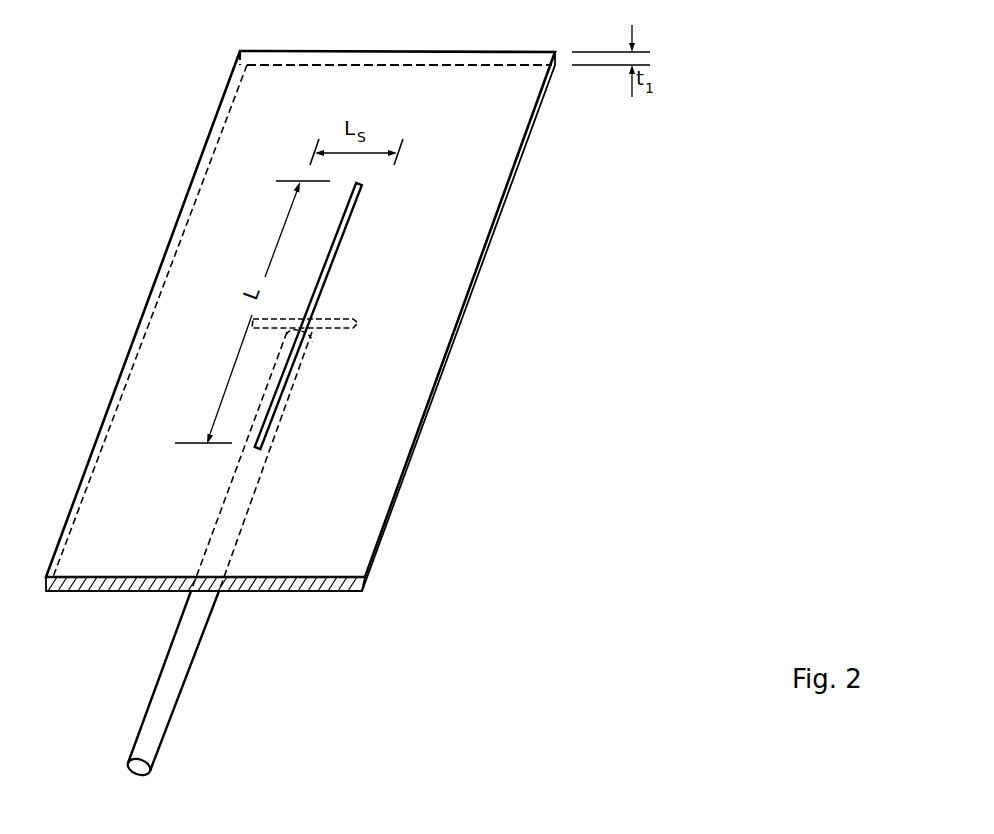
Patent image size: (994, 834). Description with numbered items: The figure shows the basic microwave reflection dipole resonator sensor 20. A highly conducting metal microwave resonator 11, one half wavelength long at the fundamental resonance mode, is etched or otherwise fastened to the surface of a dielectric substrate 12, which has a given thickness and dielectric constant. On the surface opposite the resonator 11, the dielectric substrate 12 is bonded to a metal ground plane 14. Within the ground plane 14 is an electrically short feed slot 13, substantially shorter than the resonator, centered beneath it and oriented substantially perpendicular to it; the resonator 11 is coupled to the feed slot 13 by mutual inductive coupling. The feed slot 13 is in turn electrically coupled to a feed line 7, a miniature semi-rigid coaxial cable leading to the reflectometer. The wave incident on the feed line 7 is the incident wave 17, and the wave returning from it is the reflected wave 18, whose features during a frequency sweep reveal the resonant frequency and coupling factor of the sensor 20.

The feed line 7 is at (205, 627).
The microwave resonator 11 is at (363, 188).
The dielectric substrate 12 is at (457, 210).
The feed slot 13 is at (358, 323).
The metal ground plane 14 is at (448, 366).
The incident wave 17 is at (127, 691).
The reflected wave 18 is at (205, 692).
The sensor 20 is at (354, 414).